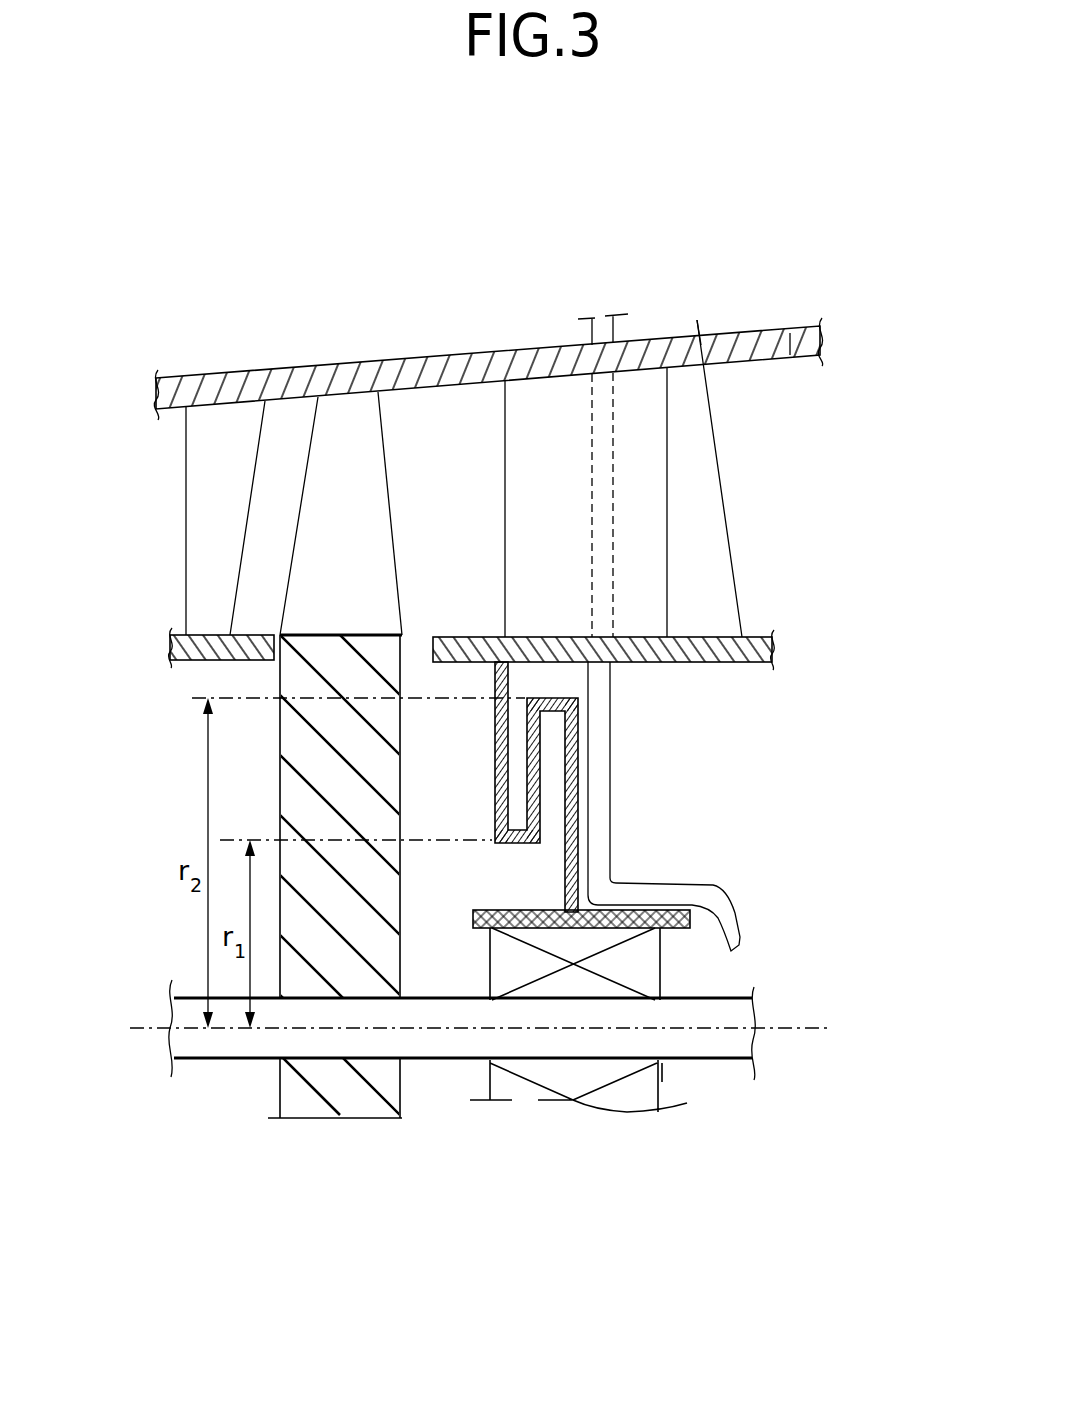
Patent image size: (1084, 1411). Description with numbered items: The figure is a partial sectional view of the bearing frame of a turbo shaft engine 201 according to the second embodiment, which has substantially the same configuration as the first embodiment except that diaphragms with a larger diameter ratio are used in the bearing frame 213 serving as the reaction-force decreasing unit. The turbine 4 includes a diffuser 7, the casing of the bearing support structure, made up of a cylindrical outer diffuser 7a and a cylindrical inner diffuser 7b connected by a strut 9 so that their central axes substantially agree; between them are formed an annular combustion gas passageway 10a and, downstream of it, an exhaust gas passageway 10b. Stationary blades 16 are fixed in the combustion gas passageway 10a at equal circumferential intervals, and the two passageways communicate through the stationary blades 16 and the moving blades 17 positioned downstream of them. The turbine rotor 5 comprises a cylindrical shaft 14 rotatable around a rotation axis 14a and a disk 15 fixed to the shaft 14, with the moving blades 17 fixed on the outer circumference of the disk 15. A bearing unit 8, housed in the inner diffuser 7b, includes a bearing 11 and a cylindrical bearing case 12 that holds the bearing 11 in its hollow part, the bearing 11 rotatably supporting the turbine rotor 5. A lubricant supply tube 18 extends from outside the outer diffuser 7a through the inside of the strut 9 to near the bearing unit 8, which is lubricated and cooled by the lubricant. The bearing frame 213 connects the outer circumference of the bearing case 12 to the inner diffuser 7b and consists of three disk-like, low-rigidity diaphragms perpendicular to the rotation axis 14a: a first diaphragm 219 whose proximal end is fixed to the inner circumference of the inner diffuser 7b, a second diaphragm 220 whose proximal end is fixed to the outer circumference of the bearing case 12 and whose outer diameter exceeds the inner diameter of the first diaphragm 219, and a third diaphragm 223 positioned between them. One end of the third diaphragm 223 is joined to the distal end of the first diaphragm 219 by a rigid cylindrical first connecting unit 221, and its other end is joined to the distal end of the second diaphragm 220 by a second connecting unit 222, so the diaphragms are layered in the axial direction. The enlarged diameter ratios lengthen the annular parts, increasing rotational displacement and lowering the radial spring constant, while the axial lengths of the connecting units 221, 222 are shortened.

The turbo shaft engine 201 is at (387, 141).
The turbine 4 is at (438, 350).
The diffuser 7 is at (632, 188).
The outer diffuser 7a is at (790, 333).
The inner diffuser 7b is at (697, 320).
The strut 9 is at (533, 413).
The combustion gas passageway 10a is at (280, 485).
The exhaust gas passageway 10b is at (700, 573).
The stationary blades 16 is at (208, 535).
The moving blades 17 is at (327, 593).
The lubricant supply tube 18 is at (600, 803).
The shaft 14 is at (250, 1043).
The rotation axis 14a is at (140, 1027).
The disk 15 is at (313, 1093).
The turbine rotor 5 is at (172, 1112).
The first diaphragm 219 is at (494, 737).
The third diaphragm 223 is at (527, 789).
The first connecting unit 221 is at (520, 843).
The second connecting unit 222 is at (553, 713).
The second diaphragm 220 is at (582, 848).
The bearing frame 213 is at (245, 1275).
The bearing case 12 is at (699, 923).
The bearing 11 is at (650, 1089).
The bearing unit 8 is at (775, 1110).